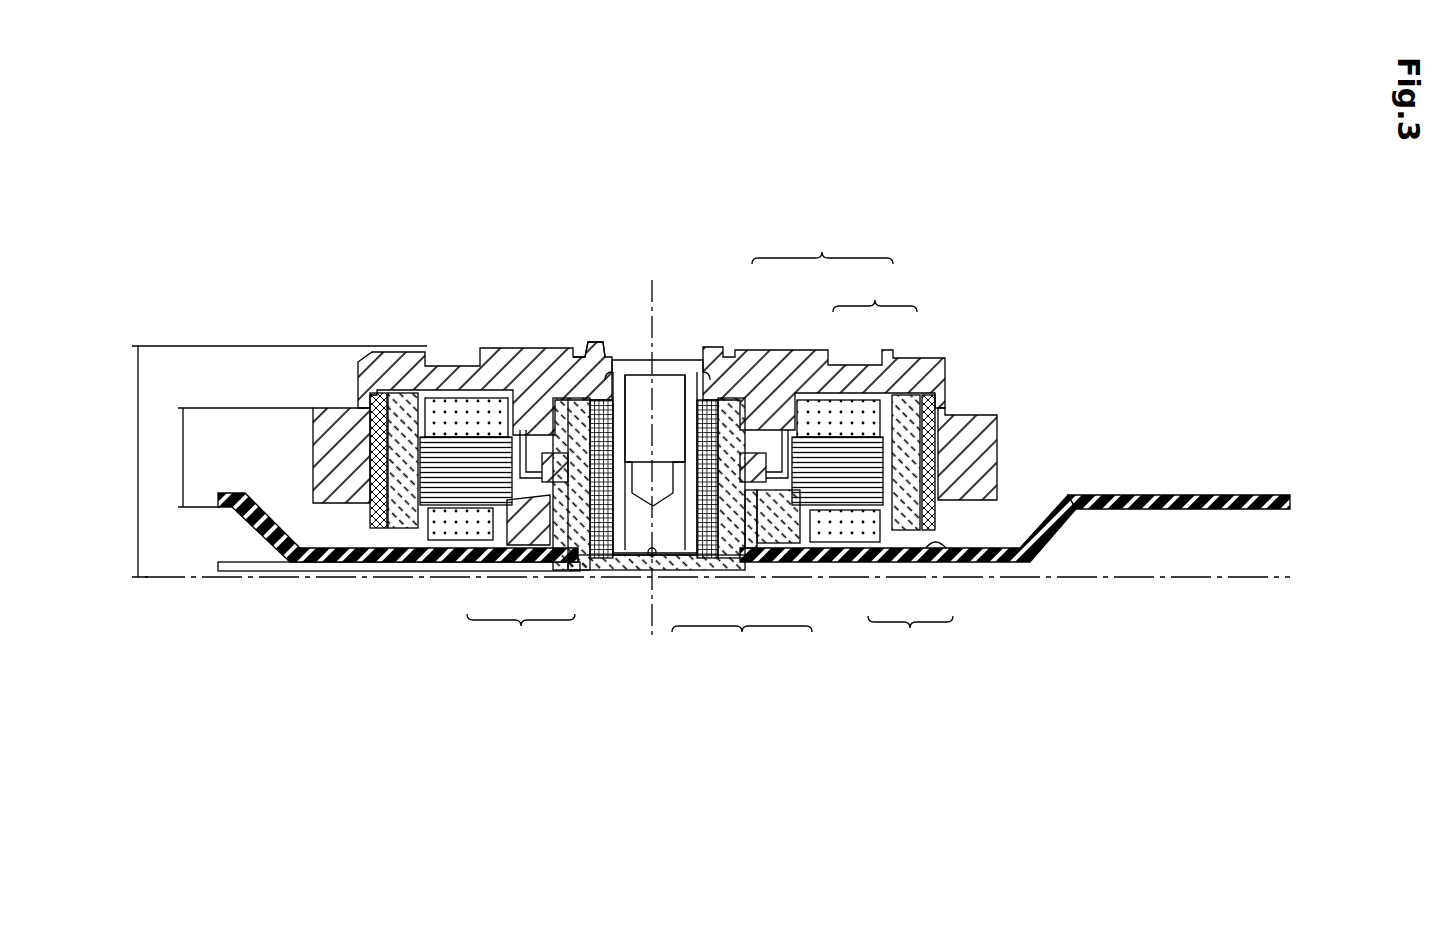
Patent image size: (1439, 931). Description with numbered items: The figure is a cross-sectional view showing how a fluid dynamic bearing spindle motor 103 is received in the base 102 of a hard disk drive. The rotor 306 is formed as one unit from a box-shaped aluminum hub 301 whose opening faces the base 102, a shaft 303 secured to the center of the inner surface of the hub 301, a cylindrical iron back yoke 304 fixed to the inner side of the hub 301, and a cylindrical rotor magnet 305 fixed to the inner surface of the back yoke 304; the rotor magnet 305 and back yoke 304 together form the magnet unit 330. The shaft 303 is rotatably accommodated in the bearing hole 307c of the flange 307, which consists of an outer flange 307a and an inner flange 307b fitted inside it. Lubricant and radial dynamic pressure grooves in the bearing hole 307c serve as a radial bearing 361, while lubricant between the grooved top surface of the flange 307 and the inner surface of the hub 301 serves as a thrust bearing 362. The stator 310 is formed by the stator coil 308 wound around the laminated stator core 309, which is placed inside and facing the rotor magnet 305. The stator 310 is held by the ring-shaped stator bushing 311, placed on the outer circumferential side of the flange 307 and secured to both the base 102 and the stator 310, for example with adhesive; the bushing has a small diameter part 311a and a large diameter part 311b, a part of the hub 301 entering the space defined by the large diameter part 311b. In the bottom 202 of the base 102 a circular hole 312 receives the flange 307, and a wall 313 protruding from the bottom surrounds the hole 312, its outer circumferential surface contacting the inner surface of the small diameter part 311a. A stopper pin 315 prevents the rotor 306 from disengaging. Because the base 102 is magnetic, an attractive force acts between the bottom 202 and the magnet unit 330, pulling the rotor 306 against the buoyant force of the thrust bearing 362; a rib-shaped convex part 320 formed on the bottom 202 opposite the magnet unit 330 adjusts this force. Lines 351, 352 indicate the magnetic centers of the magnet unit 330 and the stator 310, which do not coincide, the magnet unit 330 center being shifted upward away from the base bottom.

The base 102 is at (1198, 497).
The spindle motor 103 is at (1099, 268).
The bottom of the base 202 is at (302, 562).
The hub 301 is at (777, 370).
The shaft 303 is at (668, 385).
The back yoke 304 is at (935, 407).
The rotor magnet 305 is at (895, 397).
The rotor 306 is at (803, 246).
The flange 307 is at (694, 530).
The outer flange 307a is at (748, 560).
The inner flange 307b is at (722, 558).
The bearing hole 307c is at (674, 560).
The stator coil 308 is at (860, 530).
The stator core 309 is at (890, 520).
The stator 310 is at (855, 528).
The stator bushing 311 is at (527, 527).
The small diameter part 311a is at (540, 548).
The large diameter part 311b is at (556, 562).
The hole 312 is at (586, 570).
The wall 313 is at (556, 562).
The stopper pin 315 is at (548, 455).
The convex part 320 is at (372, 542).
The magnet unit 330 is at (856, 297).
The magnetic center line of the magnet unit 351 is at (362, 410).
The magnetic center line of the stator 352 is at (486, 470).
The radial bearing 361 is at (632, 372).
The thrust bearing 362 is at (584, 405).